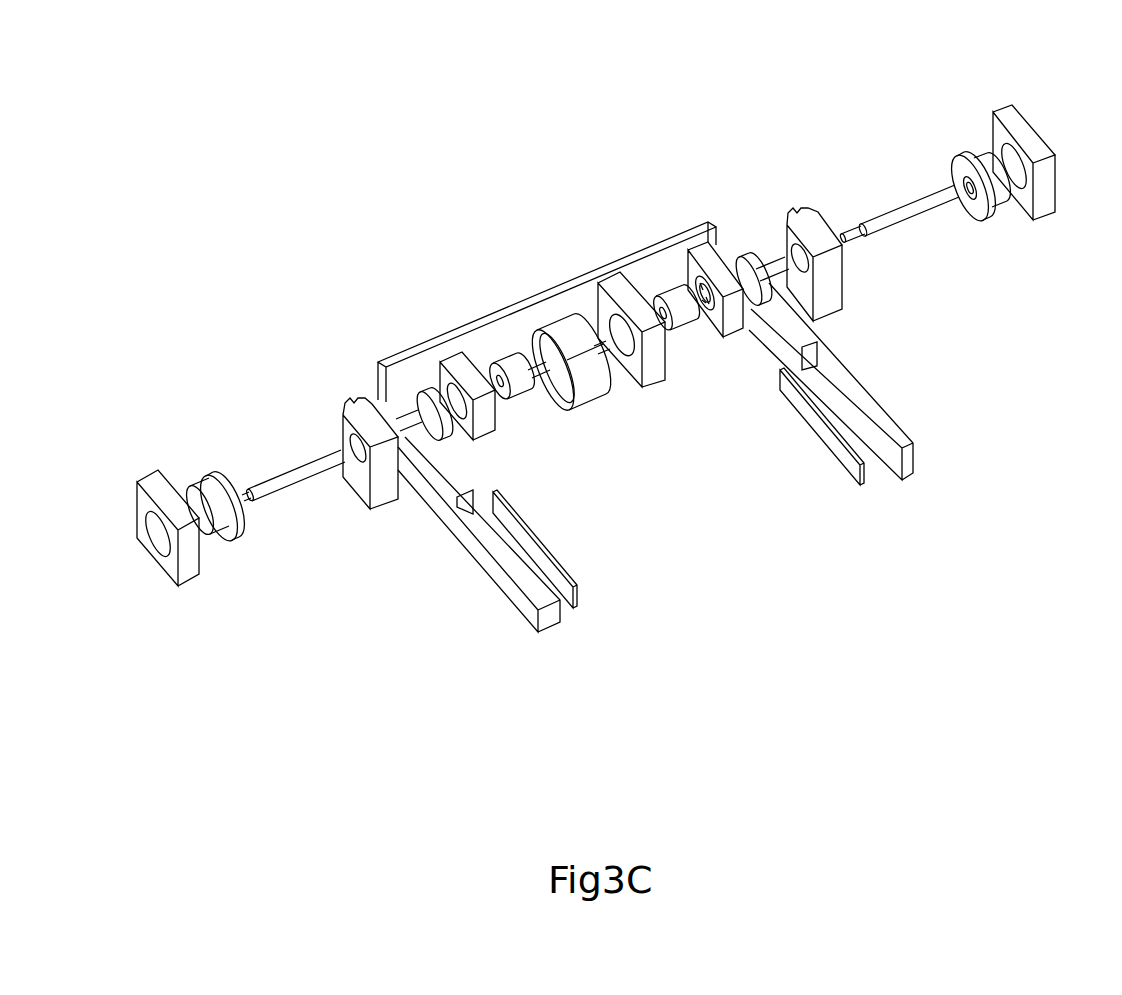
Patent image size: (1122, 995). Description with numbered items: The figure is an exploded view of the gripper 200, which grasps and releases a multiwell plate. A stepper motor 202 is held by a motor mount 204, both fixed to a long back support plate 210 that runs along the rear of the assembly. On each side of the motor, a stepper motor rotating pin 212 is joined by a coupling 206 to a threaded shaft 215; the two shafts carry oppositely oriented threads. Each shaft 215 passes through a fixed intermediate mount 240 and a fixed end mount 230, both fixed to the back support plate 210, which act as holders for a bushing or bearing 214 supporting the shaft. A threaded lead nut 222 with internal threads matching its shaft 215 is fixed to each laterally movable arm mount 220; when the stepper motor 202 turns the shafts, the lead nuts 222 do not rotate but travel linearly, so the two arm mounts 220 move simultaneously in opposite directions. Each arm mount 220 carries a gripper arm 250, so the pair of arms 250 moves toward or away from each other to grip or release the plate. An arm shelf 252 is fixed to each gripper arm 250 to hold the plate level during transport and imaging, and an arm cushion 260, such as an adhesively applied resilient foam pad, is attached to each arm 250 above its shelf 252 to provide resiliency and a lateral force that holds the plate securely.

The gripper 200 is at (440, 111).
The stepper motor 202 is at (560, 315).
The motor mount 204 is at (627, 297).
The coupling 206 is at (514, 372).
The back support plate 210 is at (398, 358).
The stepper motor rotating pins 212 is at (608, 350).
The bearing holder 214 is at (203, 488).
The threaded shaft 215 is at (267, 488).
The laterally movable arm mount 220 is at (352, 408).
The threaded lead nut 222 is at (412, 418).
The fixed end mount 230 is at (155, 480).
The fixed intermediate mount 240 is at (463, 358).
The gripper arm 250 is at (508, 587).
The arm shelf 252 is at (553, 617).
The arm cushion 260 is at (817, 423).